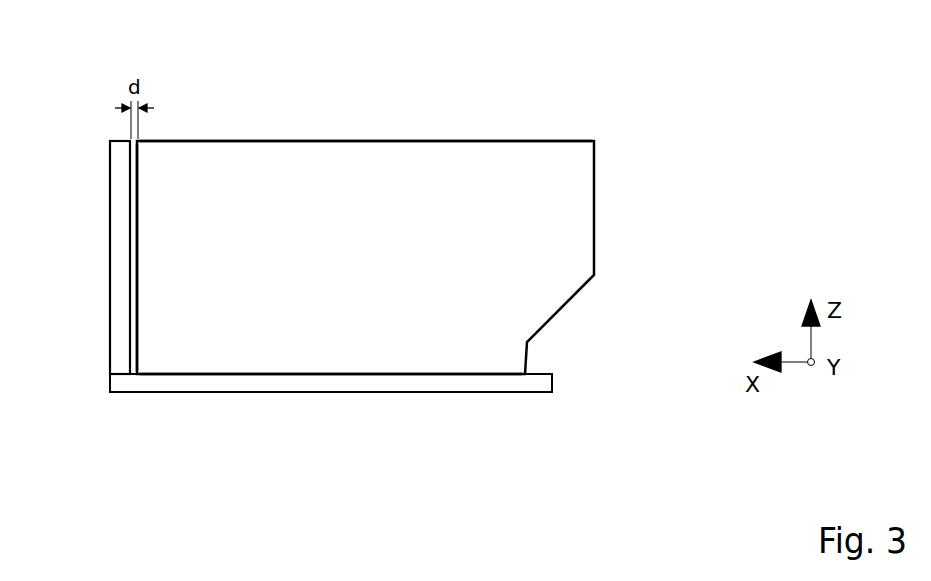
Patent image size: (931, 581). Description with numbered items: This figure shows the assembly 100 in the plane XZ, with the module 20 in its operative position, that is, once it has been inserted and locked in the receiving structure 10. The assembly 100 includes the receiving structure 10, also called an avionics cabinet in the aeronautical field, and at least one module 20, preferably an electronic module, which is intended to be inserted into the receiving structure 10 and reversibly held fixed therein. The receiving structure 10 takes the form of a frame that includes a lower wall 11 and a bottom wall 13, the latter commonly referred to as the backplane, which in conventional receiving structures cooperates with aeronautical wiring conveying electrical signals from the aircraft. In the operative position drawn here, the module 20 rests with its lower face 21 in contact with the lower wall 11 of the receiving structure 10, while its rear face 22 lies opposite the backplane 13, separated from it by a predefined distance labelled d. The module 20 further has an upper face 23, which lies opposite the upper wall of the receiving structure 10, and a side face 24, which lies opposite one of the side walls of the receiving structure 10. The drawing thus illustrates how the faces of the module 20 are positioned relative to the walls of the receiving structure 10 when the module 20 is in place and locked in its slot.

The assembly 100 is at (220, 65).
The receiving structure 10 is at (82, 361).
The lower wall 11 is at (228, 385).
The bottom wall 13 is at (120, 222).
The module 20 is at (401, 128).
The lower face 21 is at (370, 372).
The rear face 22 is at (138, 255).
The upper face 23 is at (510, 141).
The side face 24 is at (546, 212).